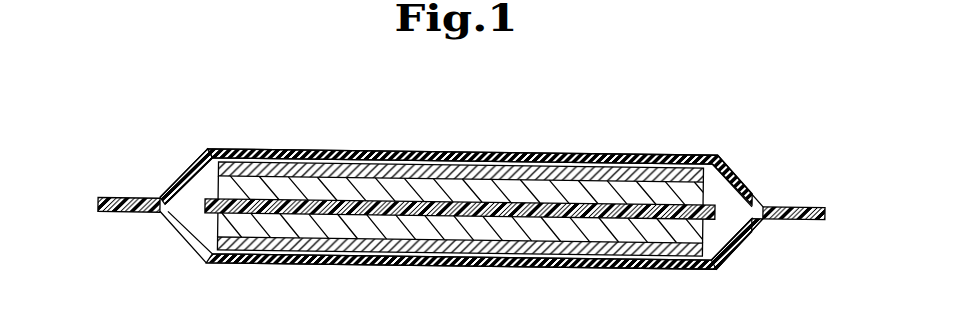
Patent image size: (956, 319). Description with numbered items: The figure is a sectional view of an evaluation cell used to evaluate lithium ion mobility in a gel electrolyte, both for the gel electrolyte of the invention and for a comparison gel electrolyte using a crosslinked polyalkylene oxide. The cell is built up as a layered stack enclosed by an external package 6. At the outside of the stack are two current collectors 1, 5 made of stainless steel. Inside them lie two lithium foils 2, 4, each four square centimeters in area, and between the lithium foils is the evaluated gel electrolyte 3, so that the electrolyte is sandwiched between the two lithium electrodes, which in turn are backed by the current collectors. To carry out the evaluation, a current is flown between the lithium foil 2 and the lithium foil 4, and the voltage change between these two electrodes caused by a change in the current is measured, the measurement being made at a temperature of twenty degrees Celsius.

The current collector 1 is at (735, 170).
The lithium foil 2 is at (697, 192).
The evaluated gel electrolyte 3 is at (713, 210).
The lithium foil 4 is at (697, 228).
The current collector 5 is at (710, 248).
The external package 6 is at (190, 165).